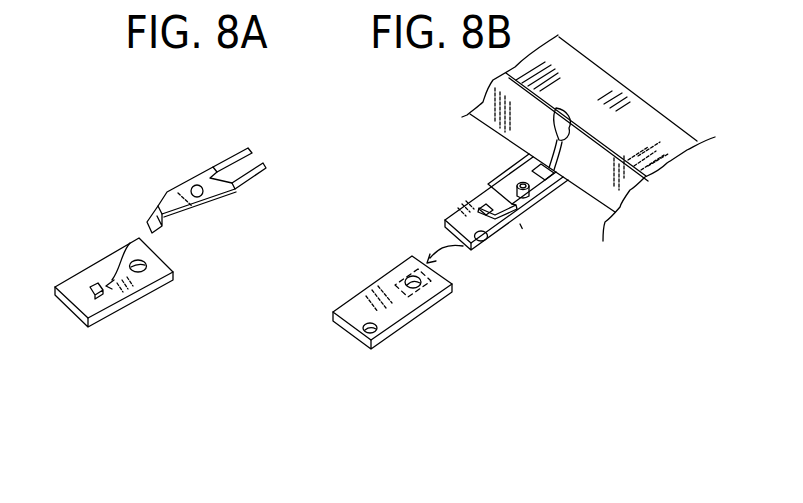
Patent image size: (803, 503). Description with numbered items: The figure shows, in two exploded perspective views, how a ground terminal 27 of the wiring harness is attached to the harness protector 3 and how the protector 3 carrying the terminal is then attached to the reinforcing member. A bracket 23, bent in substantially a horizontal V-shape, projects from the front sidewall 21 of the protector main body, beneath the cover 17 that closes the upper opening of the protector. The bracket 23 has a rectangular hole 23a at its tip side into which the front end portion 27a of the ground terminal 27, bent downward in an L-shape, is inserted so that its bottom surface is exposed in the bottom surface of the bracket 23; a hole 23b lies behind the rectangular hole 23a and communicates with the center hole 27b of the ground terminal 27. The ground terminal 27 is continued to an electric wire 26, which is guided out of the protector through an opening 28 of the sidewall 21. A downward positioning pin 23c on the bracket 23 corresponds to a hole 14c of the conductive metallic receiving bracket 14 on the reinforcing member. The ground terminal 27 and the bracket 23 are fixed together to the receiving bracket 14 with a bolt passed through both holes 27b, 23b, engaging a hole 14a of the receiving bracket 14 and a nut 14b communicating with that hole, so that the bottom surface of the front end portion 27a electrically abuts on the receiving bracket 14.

In FIG. 8B, the harness protector 3 is at (664, 106).
In FIG. 8B, the receiving bracket 14 is at (424, 318).
In FIG. 8B, the hole 14a is at (415, 284).
In FIG. 8B, the nut 14b is at (395, 272).
In FIG. 8B, the hole 14c is at (373, 332).
In FIG. 8B, the cover 17 is at (590, 100).
In FIG. 8B, the front sidewall 21 is at (612, 194).
In FIG. 8A, the bracket 23 is at (150, 296).
In FIG. 8B, the bracket 23 is at (508, 235).
In FIG. 8A, the rectangular hole 23a is at (95, 284).
In FIG. 8B, the rectangular hole 23a is at (478, 213).
In FIG. 8A, the hole 23b is at (147, 267).
In FIG. 8B, the hole 23b is at (525, 220).
In FIG. 8B, the positioning pin 23c is at (490, 253).
In FIG. 8A, the electric wire 26 is at (254, 181).
In FIG. 8B, the electric wire 26 is at (561, 155).
In FIG. 8A, the ground terminal 27 is at (212, 203).
In FIG. 8B, the ground terminal 27 is at (556, 183).
In FIG. 8A, the front end portion 27a is at (155, 228).
In FIG. 8B, the front end portion 27a is at (467, 246).
In FIG. 8A, the hole 27b is at (194, 185).
In FIG. 8B, the hole 27b is at (521, 181).
In FIG. 8B, the opening 28 is at (559, 124).